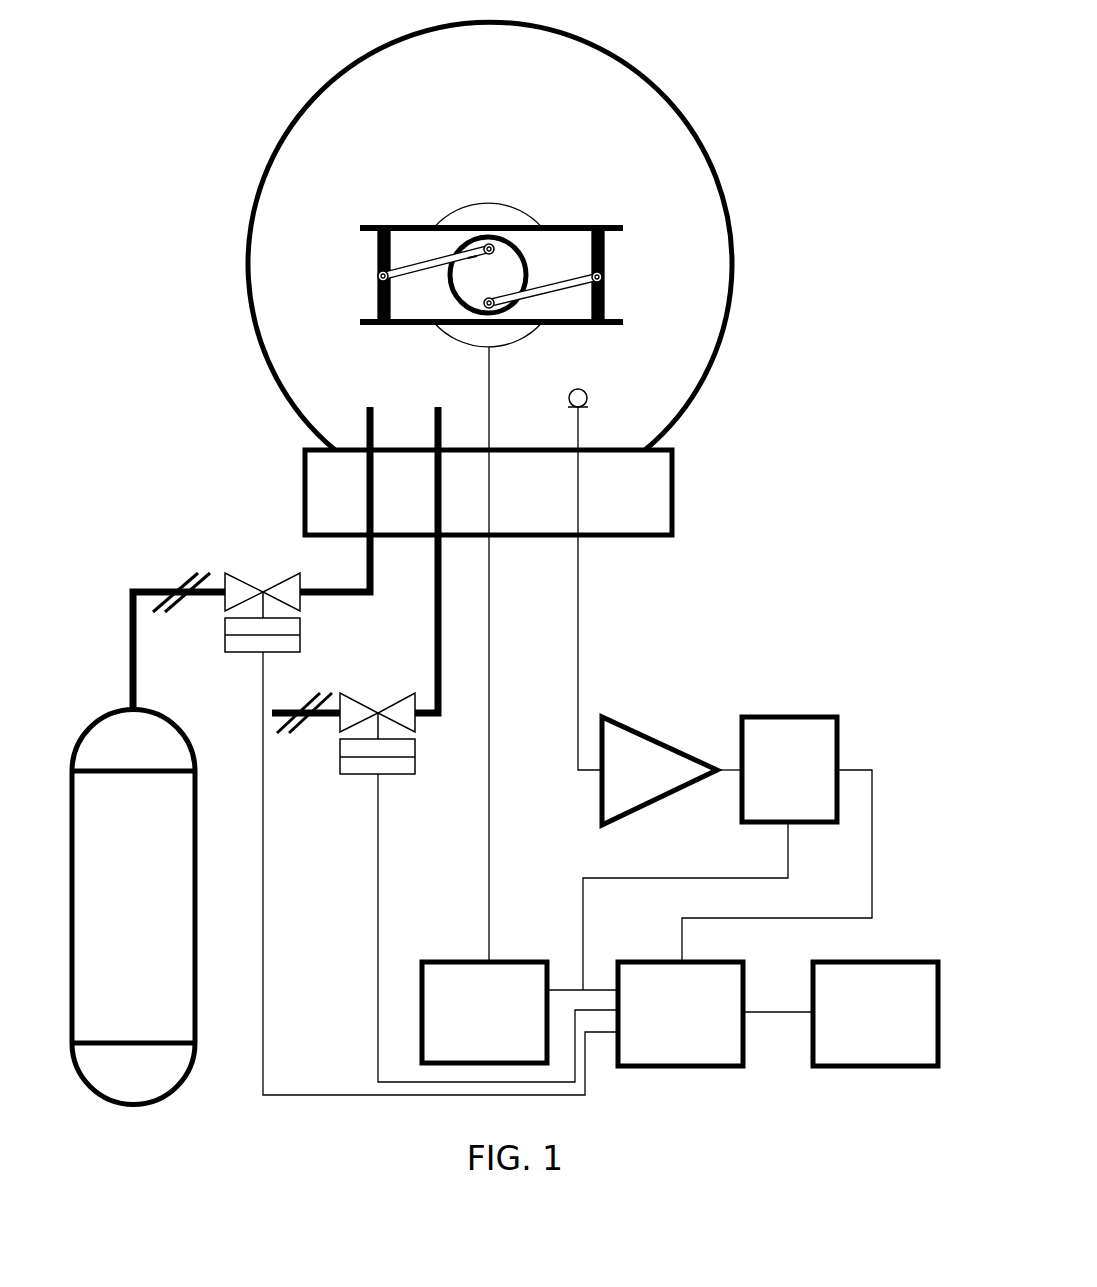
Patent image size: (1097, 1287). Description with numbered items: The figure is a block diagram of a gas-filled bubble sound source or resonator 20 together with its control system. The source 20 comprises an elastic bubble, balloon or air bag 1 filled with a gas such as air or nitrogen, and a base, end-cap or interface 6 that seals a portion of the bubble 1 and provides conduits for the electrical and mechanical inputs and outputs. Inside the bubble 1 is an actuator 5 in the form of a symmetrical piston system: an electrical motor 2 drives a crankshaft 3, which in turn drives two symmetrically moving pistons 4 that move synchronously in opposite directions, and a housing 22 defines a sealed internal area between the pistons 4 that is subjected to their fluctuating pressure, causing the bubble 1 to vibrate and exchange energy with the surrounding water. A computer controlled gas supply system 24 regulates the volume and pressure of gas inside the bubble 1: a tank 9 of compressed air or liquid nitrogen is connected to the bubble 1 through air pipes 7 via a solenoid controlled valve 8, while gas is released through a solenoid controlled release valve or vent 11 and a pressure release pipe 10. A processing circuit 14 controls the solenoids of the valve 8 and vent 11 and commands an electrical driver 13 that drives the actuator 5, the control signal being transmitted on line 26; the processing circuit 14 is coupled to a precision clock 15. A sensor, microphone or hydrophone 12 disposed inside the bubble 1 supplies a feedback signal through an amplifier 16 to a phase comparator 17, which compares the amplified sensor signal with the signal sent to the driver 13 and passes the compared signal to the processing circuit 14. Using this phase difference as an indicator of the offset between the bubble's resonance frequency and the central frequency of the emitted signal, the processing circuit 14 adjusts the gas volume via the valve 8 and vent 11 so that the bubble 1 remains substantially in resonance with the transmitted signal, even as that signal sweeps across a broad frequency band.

The bubble 1 is at (490, 236).
The electrical motor 2 is at (488, 258).
The crankshaft 3 is at (488, 275).
The pistons 4 is at (489, 276).
The actuator 5 is at (491, 260).
The base 6 is at (488, 492).
The air pipes 7 is at (421, 854).
The solenoid controlled valve 8 is at (251, 557).
The tank 9 is at (133, 907).
The pressure release pipe 10 is at (449, 910).
The solenoid controlled release valve 11 is at (355, 573).
The sensor 12 is at (585, 559).
The electrical driver 13 is at (520, 1012).
The processing circuit 14 is at (715, 1014).
The precision clock 15 is at (875, 1014).
The amplifier 16 is at (672, 771).
The phase comparator 17 is at (727, 853).
The gas-filled bubble sound source 20 is at (724, 78).
The housing 22 is at (412, 240).
The gas supply system 24 is at (792, 561).
The line 26 is at (490, 632).